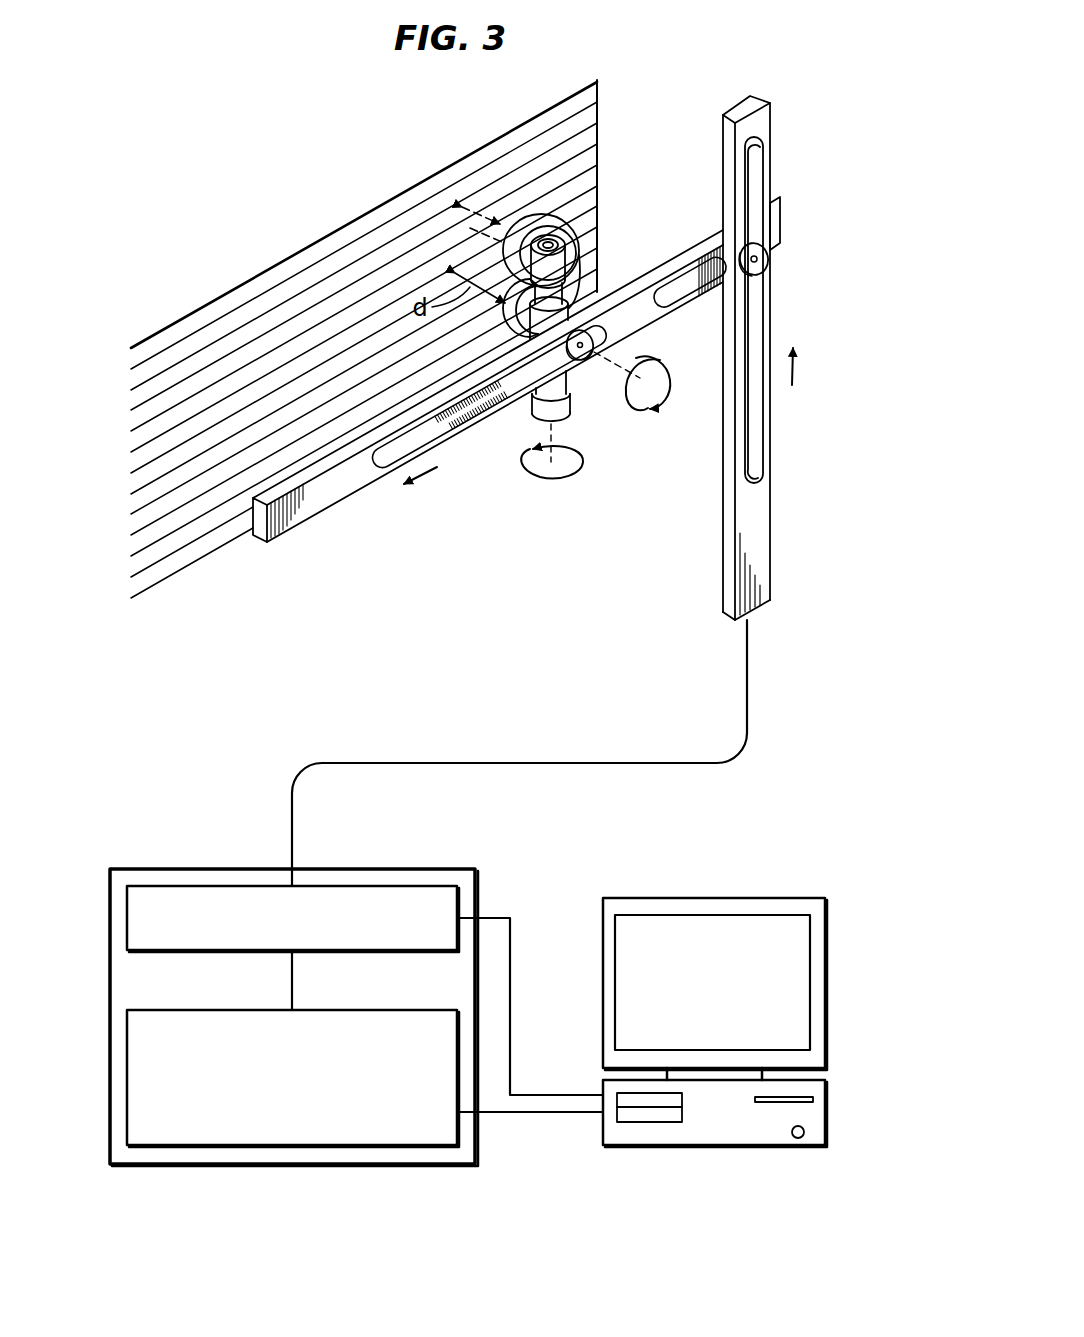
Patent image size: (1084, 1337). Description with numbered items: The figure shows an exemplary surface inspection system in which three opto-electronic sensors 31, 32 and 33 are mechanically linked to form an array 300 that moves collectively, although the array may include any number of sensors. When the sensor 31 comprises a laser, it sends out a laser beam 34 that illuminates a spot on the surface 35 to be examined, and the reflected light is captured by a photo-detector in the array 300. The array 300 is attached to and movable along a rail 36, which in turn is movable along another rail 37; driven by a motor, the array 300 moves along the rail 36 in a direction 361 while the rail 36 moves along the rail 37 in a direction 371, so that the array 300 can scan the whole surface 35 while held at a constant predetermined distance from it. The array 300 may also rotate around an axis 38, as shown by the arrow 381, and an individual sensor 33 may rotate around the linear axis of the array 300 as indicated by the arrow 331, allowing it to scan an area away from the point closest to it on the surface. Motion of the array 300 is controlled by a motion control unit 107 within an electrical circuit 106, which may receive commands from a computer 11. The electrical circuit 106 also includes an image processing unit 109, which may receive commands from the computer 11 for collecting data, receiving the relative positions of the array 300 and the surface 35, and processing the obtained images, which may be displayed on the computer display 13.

The computer 11 is at (715, 980).
The computer display 13 is at (698, 996).
The opto-electronic sensor 31 is at (540, 214).
The opto-electronic sensor 32 is at (500, 334).
The opto-electronic sensor 33 is at (510, 407).
The laser beam 34 is at (479, 200).
The surface 35 is at (218, 297).
The rail 36 is at (363, 488).
The rail 37 is at (772, 545).
The axis 38 is at (618, 348).
The electrical circuit 106 is at (176, 868).
The motion control unit 107 is at (399, 884).
The image processing unit 109 is at (256, 1165).
The array 300 is at (572, 212).
The arrow 331 is at (557, 482).
The direction 361 is at (437, 468).
The direction 371 is at (793, 370).
The arrow 381 is at (645, 412).